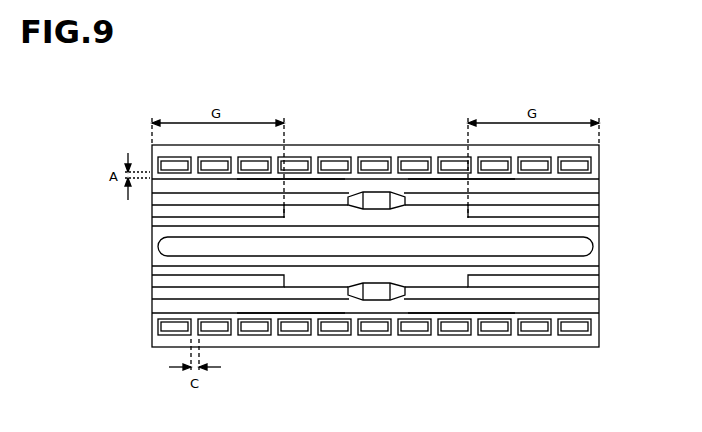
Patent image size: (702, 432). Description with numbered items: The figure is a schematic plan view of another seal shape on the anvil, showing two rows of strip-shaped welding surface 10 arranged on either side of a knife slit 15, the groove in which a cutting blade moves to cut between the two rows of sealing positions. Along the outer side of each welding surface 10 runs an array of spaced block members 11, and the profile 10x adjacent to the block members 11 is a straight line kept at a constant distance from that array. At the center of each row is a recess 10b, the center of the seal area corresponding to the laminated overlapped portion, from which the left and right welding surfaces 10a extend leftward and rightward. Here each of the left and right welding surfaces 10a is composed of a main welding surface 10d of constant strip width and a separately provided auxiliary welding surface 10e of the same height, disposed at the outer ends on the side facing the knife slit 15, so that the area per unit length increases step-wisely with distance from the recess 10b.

The welding surface 10 is at (142, 207).
The left and right welding surfaces 10a is at (345, 97).
The recess 10b is at (378, 199).
The main welding surface 10d is at (316, 198).
The auxiliary welding surface 10e is at (264, 212).
The profile 10x is at (580, 193).
The block members 11 is at (545, 157).
The knife slit 15 is at (585, 243).